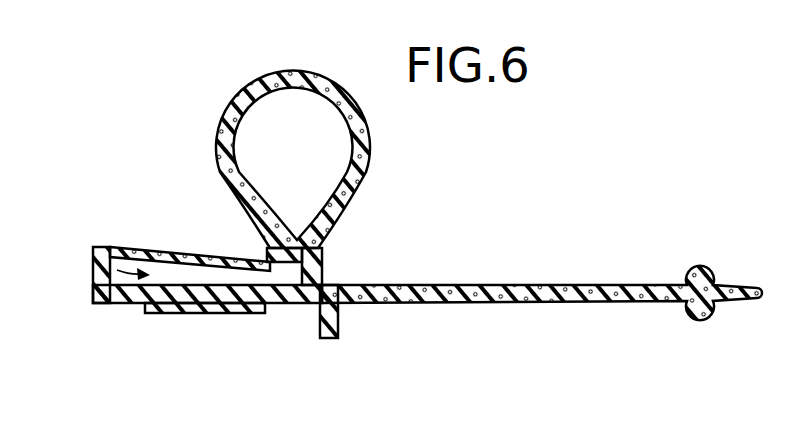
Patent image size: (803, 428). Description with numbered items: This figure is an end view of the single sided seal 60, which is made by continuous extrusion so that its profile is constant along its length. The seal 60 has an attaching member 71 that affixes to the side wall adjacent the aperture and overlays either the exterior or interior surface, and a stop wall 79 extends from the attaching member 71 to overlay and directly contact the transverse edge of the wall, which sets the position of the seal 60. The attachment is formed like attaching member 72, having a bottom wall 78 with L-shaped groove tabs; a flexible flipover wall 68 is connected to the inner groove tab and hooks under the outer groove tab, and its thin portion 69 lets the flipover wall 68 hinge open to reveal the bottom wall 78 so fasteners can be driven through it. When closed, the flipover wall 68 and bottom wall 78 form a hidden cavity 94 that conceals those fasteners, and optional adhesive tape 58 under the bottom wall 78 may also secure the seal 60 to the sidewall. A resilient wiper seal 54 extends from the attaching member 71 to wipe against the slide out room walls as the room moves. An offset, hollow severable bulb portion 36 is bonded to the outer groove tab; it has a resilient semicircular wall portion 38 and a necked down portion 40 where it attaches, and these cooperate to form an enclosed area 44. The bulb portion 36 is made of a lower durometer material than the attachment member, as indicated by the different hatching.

The single sided seal 60 is at (132, 77).
The severable bulb portion 36 is at (310, 159).
The semicircular wall portion 38 is at (228, 116).
The enclosed area 44 is at (294, 130).
The necked down portion 40 is at (334, 236).
The bottom wall 78 is at (124, 305).
The flipover wall 68 is at (205, 250).
The thin portion 69 is at (157, 245).
The hidden cavity 94 is at (100, 251).
The adhesive tape 58 is at (200, 315).
The attaching member 71 is at (242, 328).
The attaching member 72 is at (290, 304).
The stop wall 79 is at (338, 322).
The wiper seal 54 is at (447, 285).